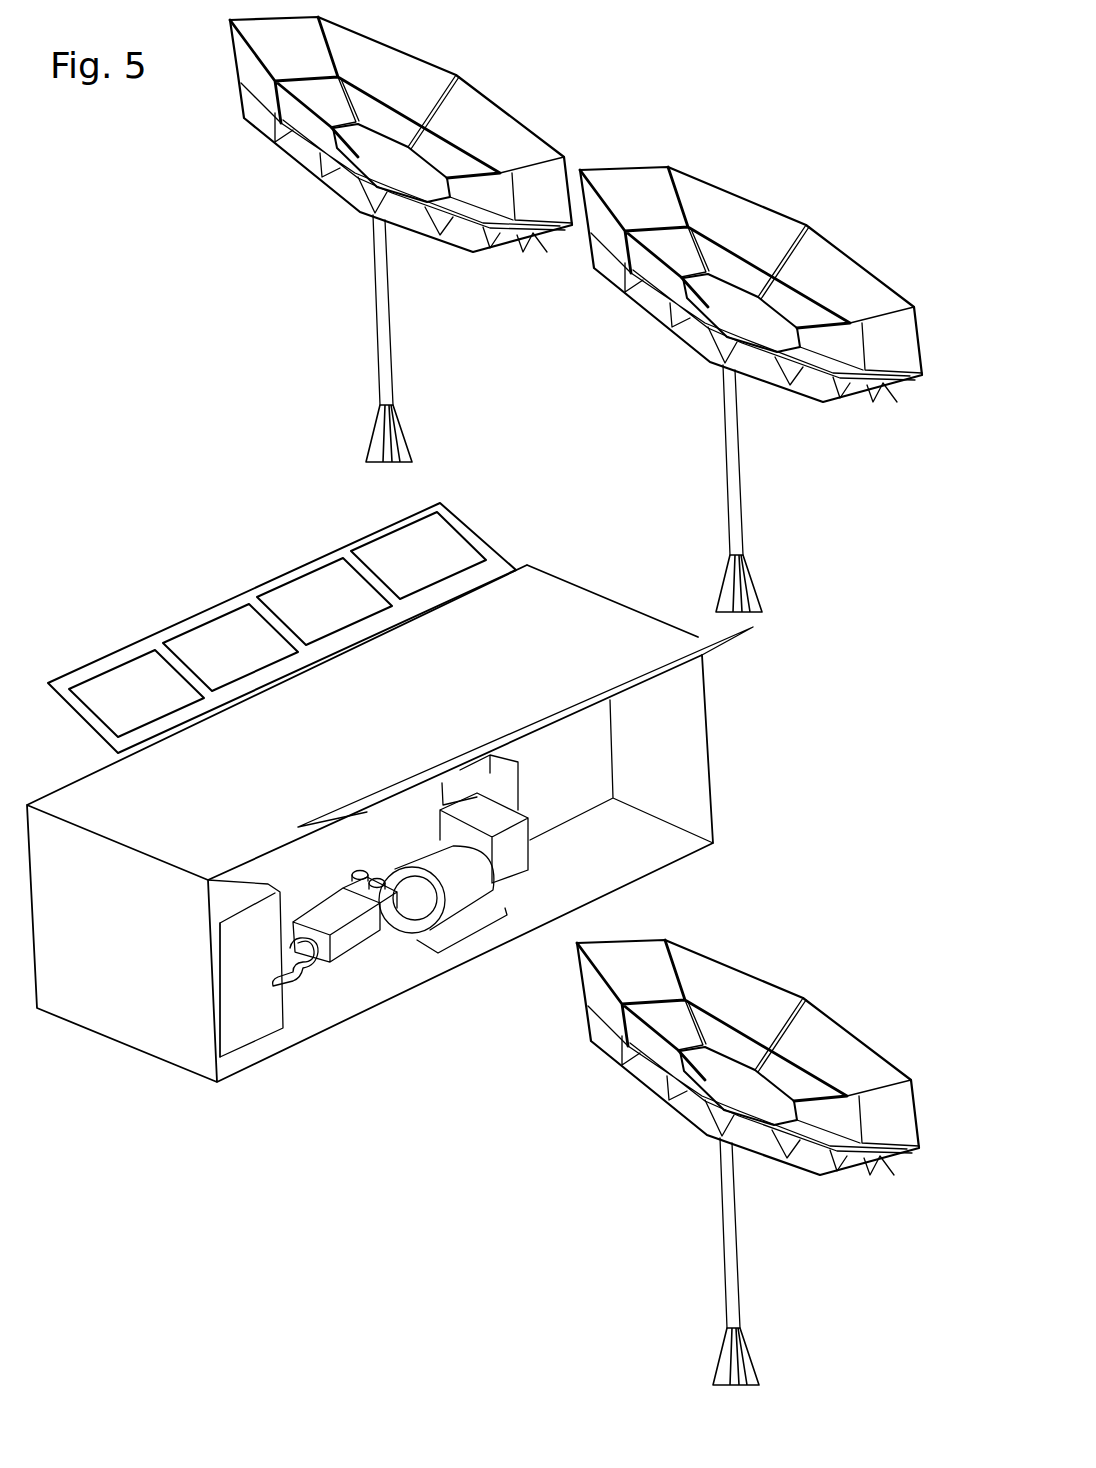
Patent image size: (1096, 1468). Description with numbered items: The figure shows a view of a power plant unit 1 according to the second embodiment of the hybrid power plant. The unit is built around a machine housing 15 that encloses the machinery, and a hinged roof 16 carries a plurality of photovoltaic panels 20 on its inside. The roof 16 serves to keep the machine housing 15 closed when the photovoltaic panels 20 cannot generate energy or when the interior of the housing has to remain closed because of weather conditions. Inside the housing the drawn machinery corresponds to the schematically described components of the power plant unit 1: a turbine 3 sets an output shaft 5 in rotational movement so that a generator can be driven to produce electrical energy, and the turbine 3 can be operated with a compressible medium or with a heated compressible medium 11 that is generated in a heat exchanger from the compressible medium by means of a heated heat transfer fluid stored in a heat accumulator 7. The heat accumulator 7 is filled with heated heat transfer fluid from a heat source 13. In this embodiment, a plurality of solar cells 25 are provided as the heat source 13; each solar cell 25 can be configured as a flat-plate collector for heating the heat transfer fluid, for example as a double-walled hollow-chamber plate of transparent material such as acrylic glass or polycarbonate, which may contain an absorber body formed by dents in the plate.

The power plant unit 1 is at (163, 583).
The turbine 3 is at (357, 940).
The output shaft 5 is at (455, 886).
The heat accumulator 7 is at (261, 1020).
The heated compressible medium 11 is at (294, 968).
The heat source 13 is at (113, 694).
The machine housing 15 is at (141, 960).
The hinged roof 16 is at (345, 548).
The photovoltaic panels 20 is at (322, 585).
The solar cell 25 is at (502, 118).